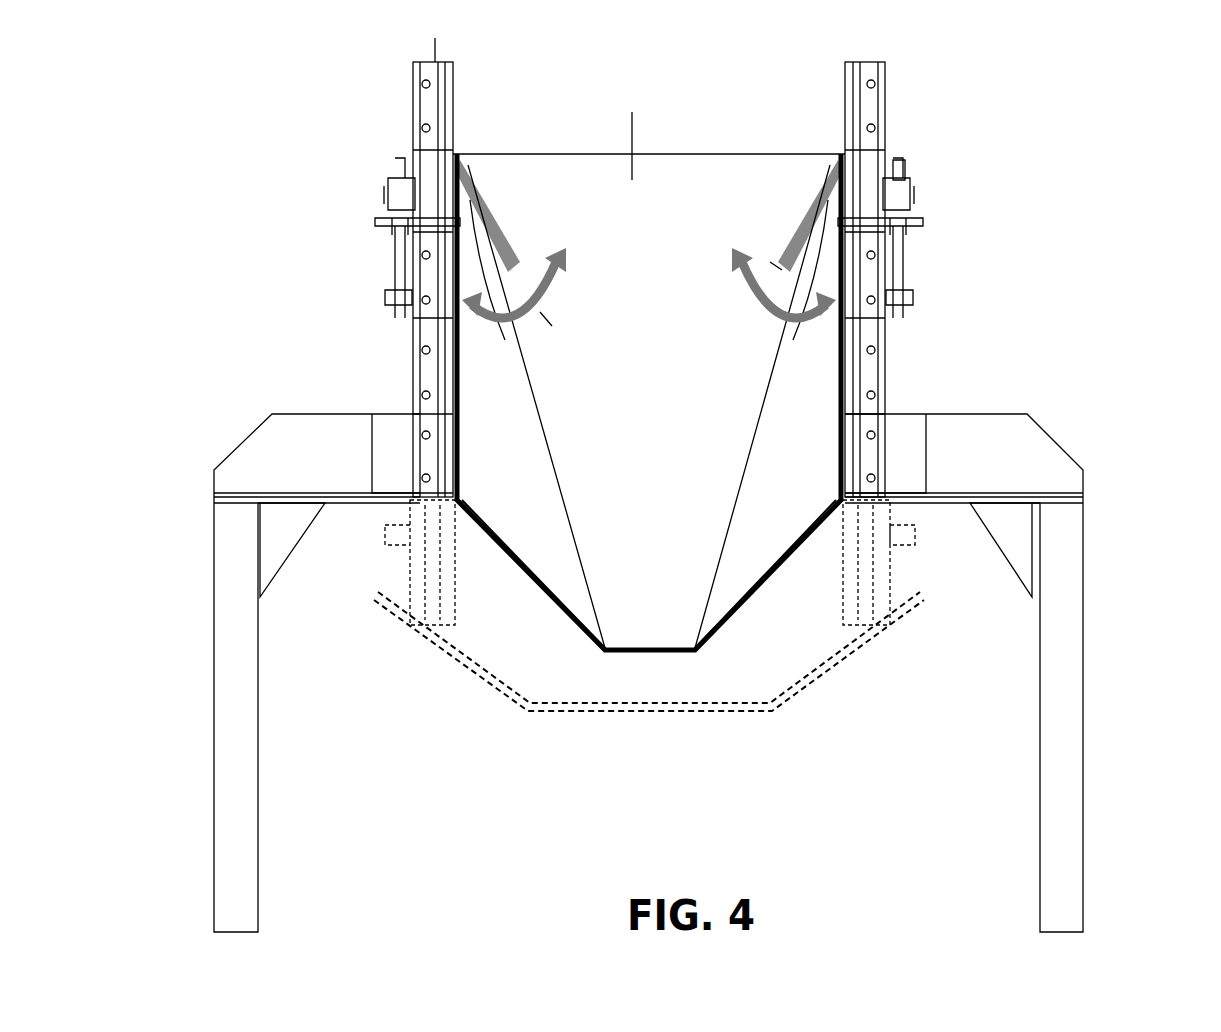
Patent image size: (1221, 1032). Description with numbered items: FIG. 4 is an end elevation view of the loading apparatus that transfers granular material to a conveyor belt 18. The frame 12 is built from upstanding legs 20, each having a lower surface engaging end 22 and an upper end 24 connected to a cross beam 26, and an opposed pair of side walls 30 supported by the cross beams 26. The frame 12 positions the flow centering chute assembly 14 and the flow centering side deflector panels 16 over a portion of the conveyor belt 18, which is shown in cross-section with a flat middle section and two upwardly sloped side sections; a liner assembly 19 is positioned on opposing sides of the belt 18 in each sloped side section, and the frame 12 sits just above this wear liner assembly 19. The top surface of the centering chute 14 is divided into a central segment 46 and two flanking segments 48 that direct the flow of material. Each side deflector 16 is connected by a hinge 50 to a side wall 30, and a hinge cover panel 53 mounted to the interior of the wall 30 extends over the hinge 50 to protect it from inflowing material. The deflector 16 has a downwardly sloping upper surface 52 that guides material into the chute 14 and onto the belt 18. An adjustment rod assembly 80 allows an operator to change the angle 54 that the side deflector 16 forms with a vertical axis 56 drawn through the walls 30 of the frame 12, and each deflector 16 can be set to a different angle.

The frame 12 is at (872, 62).
The flow centering chute assembly 14 is at (630, 133).
The flow centering side deflector panel 16 is at (508, 298).
The conveyor belt 18 is at (680, 705).
The liner assembly 19 is at (410, 605).
The upstanding leg 20 is at (1055, 722).
The lower surface engaging end 22 is at (232, 775).
The upper end 24 is at (233, 503).
The cross beam 26 is at (289, 441).
The side wall 30 is at (440, 62).
The central segment 46 is at (633, 505).
The flanking segment 48 is at (505, 487).
The hinge 50 is at (830, 160).
The upper surface 52 is at (770, 268).
The hinge cover panel 53 is at (462, 157).
The angle 54 is at (548, 322).
The vertical axis 56 is at (435, 38).
The adjustment rod assembly 80 is at (905, 205).